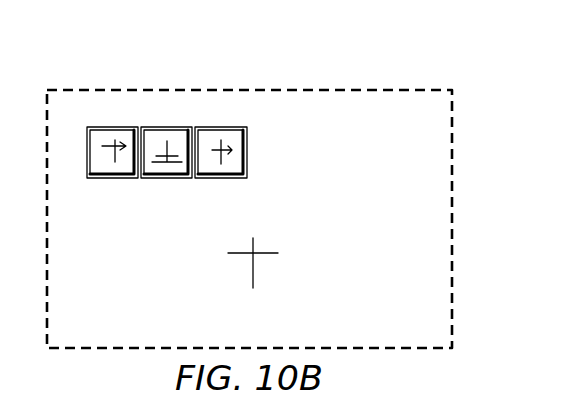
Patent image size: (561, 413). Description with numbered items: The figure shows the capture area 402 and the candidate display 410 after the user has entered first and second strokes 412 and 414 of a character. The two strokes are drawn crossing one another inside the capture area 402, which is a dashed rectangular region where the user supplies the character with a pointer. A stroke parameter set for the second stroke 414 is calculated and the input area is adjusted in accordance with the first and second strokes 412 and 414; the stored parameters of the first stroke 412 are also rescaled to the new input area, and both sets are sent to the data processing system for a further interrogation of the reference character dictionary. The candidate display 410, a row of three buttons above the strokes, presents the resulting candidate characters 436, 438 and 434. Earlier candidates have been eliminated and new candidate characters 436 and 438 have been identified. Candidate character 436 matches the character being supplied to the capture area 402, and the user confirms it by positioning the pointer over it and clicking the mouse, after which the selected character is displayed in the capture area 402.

The capture area 402 is at (314, 80).
The candidate display 410 is at (203, 175).
The first stroke 412 is at (255, 265).
The second stroke 414 is at (265, 253).
The candidate character 434 is at (218, 178).
The candidate character 436 is at (113, 178).
The candidate character 438 is at (167, 178).